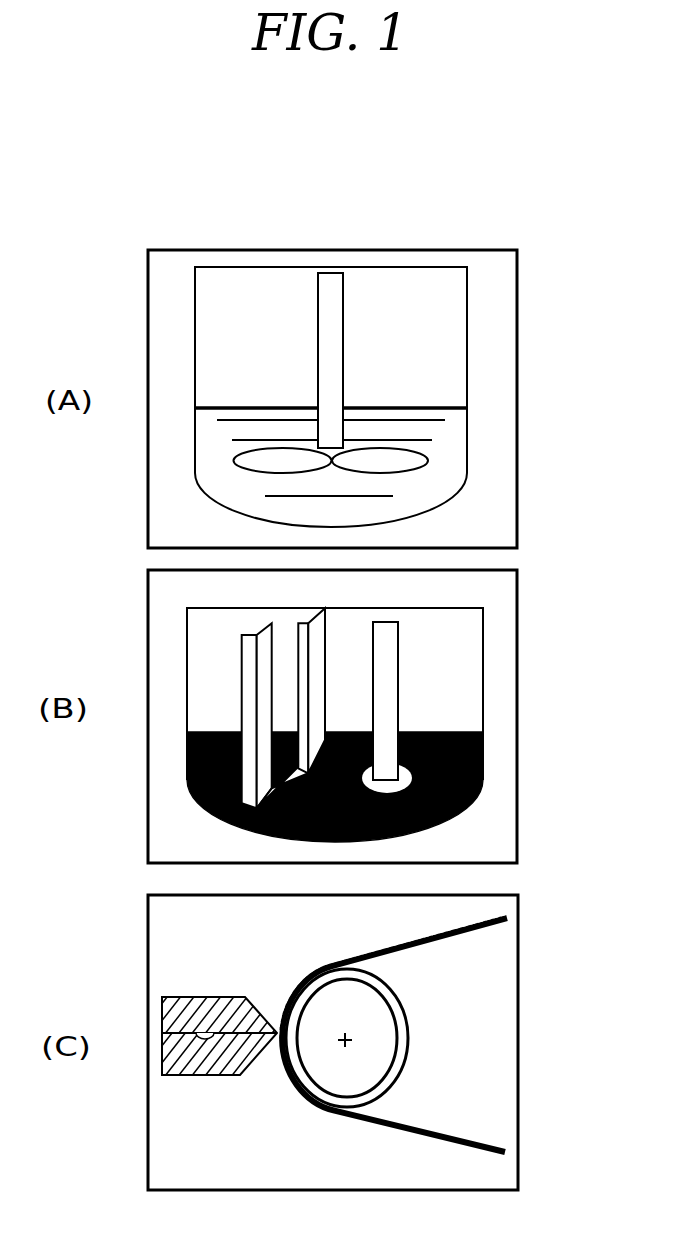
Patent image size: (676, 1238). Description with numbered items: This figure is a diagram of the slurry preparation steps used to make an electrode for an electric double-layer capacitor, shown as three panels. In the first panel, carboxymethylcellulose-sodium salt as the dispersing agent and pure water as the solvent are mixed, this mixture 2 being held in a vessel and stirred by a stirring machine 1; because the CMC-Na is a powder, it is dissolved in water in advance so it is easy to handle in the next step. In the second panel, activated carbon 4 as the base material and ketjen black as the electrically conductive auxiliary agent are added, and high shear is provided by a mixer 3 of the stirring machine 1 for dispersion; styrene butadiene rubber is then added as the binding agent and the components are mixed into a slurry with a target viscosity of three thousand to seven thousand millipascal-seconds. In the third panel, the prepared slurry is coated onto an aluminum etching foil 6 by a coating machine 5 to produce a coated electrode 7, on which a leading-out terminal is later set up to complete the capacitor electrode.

The stirring machine 1 is at (333, 318).
The mixture of dispersing agent and solvent 2 is at (437, 472).
The mixer 3 is at (385, 675).
The activated carbon 4 is at (187, 776).
The coating machine 5 is at (407, 1007).
The aluminum etching foil 6 is at (437, 1133).
The coated electrode 7 is at (457, 925).